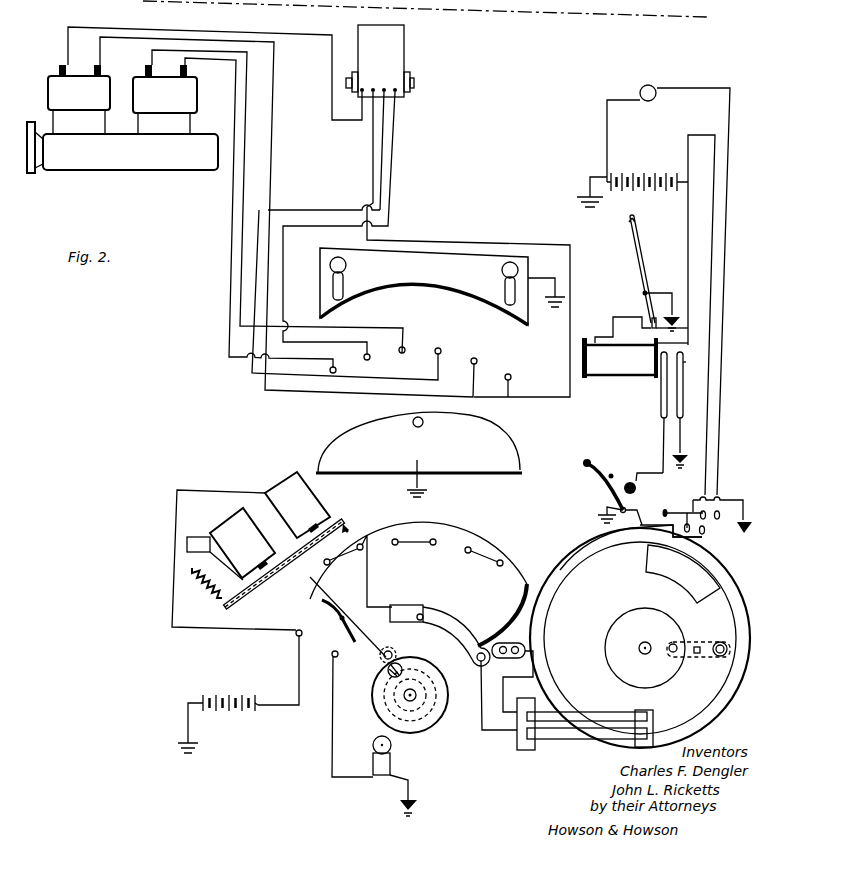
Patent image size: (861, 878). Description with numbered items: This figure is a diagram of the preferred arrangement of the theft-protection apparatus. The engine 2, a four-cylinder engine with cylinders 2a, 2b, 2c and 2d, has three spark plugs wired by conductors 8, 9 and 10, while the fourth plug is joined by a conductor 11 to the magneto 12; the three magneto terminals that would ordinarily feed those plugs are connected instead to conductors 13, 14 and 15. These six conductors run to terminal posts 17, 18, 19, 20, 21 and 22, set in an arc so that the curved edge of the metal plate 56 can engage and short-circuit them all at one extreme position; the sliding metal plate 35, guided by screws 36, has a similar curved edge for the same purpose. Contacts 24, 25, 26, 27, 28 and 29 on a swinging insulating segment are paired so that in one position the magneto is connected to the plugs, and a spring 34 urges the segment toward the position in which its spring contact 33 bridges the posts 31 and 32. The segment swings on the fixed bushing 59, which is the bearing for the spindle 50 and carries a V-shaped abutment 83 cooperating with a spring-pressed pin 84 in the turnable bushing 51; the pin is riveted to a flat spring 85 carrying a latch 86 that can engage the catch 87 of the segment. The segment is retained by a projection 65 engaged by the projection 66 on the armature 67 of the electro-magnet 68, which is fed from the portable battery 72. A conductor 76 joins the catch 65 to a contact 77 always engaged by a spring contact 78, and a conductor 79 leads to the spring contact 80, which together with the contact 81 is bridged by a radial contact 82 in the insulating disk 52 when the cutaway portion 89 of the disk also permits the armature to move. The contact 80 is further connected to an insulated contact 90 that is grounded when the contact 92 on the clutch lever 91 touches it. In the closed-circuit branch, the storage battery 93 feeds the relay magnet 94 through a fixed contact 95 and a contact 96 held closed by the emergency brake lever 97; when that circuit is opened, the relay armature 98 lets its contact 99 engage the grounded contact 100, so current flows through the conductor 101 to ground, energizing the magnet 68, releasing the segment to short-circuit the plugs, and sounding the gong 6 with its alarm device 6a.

The multi-cylinder engine 2 is at (122, 141).
The battery cell 2a is at (79, 87).
The battery cell 2b is at (95, 83).
The battery cell 2c is at (165, 89).
The battery cell 2d is at (181, 85).
The gong 6 is at (391, 746).
The electrical alarm device 6a is at (390, 763).
The conductor 8 is at (229, 189).
The conductor 9 is at (243, 188).
The conductor 10 is at (272, 181).
The conductor 11 is at (305, 42).
The magneto 12 is at (404, 55).
The conductor 13 is at (372, 153).
The conductor 14 is at (384, 168).
The conductor 15 is at (395, 143).
The terminal post 17 is at (511, 376).
The terminal post 18 is at (477, 360).
The terminal post 19 is at (441, 350).
The terminal post 20 is at (405, 352).
The terminal post 21 is at (370, 359).
The terminal post 22 is at (336, 371).
The contact 24 is at (503, 572).
The contact 25 is at (477, 558).
The contact 26 is at (440, 550).
The contact 27 is at (411, 549).
The contact 28 is at (362, 550).
The contact 29 is at (340, 565).
The metallic post 31 is at (297, 630).
The metallic post 32 is at (341, 711).
The spring contact 33 is at (340, 620).
The spring 34 is at (498, 618).
The metal plate 35 is at (442, 286).
The screws 36 is at (346, 266).
The spindle 50 is at (380, 652).
The metal bushing 51 is at (673, 620).
The insulating disk 52 is at (738, 597).
The metal plate 56 is at (419, 454).
The metallic bushing 59 is at (423, 730).
The projection 65 is at (349, 531).
The projection 66 is at (344, 522).
The armature 67 is at (262, 583).
The electro-magnet 68 is at (270, 525).
The battery 72 is at (229, 700).
The conductor 76 is at (368, 579).
The contact 77 is at (420, 613).
The spring contact 78 is at (448, 621).
The conductor 79 is at (485, 734).
The spring contact 80 is at (610, 715).
The contact 81 is at (570, 740).
The radially extending contact 82 is at (653, 722).
The abutment 83 is at (405, 670).
The spring pressed pin 84 is at (669, 655).
The flat spring 85 is at (700, 643).
The latch 86 is at (697, 657).
The catch 87 is at (394, 653).
The cutaway portion 89 is at (683, 574).
The insulated contact 90 is at (633, 481).
The clutch controlling lever 91 is at (600, 480).
The contact 92 is at (612, 475).
The storage battery 93 is at (646, 315).
The relay magnet 94 is at (635, 358).
The fixed contact 95 is at (679, 331).
The contact 96 is at (648, 312).
The emergency brake lever 97 is at (648, 266).
The armature 98 is at (660, 396).
The contact 99 is at (678, 403).
The grounded contact 100 is at (684, 365).
The conductor 101 is at (582, 546).